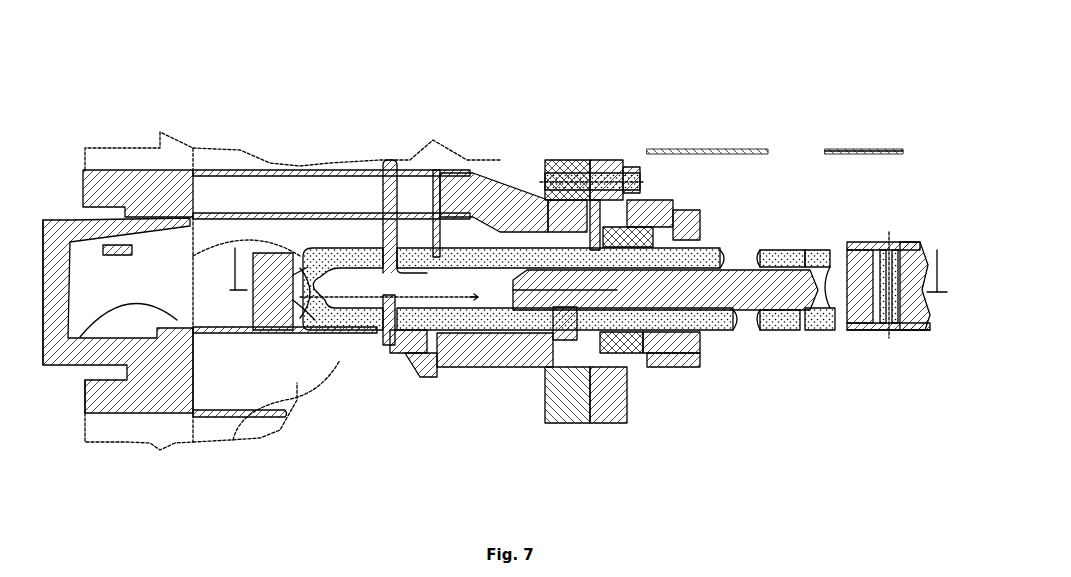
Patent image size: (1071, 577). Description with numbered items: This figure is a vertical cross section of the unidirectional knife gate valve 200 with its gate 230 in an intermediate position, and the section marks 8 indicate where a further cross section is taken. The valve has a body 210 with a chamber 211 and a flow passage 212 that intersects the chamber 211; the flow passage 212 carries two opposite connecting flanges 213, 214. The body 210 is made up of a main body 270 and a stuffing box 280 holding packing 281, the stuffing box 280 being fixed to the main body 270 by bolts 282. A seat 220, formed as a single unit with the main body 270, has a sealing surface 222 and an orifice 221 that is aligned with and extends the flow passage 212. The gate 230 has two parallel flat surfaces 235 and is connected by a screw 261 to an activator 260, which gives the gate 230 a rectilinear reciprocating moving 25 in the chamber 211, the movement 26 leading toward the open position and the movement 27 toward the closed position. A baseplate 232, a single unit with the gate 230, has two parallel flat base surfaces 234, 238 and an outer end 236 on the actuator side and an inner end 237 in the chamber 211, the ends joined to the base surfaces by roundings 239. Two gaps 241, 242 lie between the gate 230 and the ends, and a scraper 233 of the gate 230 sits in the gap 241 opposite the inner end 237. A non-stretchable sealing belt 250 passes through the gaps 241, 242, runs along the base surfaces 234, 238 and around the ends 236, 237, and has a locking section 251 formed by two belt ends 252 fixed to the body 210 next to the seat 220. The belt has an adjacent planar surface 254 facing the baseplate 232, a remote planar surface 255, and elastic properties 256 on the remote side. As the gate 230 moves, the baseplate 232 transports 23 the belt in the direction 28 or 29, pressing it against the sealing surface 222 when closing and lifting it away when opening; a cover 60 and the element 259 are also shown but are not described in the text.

The section line 8 is at (583, 270).
The transport 23 is at (768, 115).
The rectilinear reciprocating moving 25 is at (905, 115).
The movement to the open position 26 is at (881, 138).
The movement to the closed position 27 is at (841, 138).
The transport direction 28 is at (655, 158).
The transport direction 29 is at (663, 183).
The cover 60 is at (222, 137).
The knife gate valve 200 is at (362, 100).
The body 210 is at (540, 455).
The chamber 211 is at (130, 291).
The flow passage 212 is at (236, 210).
The connecting flange 213 is at (127, 152).
The connecting flange 214 is at (110, 436).
The seat 220 is at (181, 417).
The orifice 221 is at (250, 399).
The sealing surface 222 is at (61, 351).
The gate 230 is at (290, 377).
The baseplate 232 is at (777, 247).
The scraper 233 is at (553, 218).
The base surface 234 is at (741, 222).
The flat surface 235 is at (145, 200).
The outer end 236 is at (867, 240).
The inner end 237 is at (387, 199).
The base surface 238 is at (665, 329).
The rounding 239 is at (839, 322).
The gap 241 is at (368, 382).
The gap 242 is at (891, 350).
The sealing belt 250 is at (707, 320).
The locking section 251 is at (546, 179).
The belt end 252 is at (643, 380).
The adjacent planar surface 254 is at (490, 176).
The remote planar surface 255 is at (400, 384).
The elastic properties 256 is at (434, 388).
The lower housing 259 is at (495, 390).
The activator 260 is at (903, 271).
The screw 261 is at (893, 243).
The main body 270 is at (567, 410).
The stuffing box 280 is at (613, 410).
The packing 281 is at (619, 165).
The bolts 282 is at (572, 142).